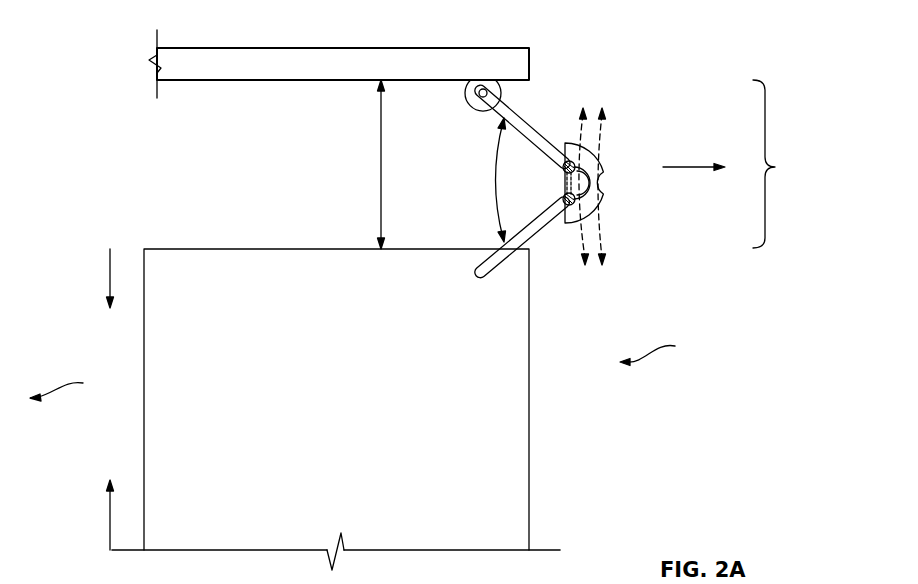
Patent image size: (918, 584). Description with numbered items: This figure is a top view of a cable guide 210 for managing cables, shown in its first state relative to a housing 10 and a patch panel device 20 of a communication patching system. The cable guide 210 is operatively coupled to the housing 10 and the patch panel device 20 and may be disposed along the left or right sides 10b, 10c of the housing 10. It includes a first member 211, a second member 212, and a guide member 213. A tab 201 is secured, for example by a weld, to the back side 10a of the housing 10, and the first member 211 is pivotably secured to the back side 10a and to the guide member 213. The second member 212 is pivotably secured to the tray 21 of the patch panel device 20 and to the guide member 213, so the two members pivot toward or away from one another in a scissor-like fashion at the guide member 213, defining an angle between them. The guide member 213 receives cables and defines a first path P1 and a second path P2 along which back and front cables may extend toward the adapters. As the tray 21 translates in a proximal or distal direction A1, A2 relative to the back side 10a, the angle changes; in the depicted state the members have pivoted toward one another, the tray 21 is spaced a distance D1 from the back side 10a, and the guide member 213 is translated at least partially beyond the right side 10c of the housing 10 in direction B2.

The housing 10 is at (291, 55).
The back side 10a is at (176, 63).
The left side 10b is at (77, 387).
The right side 10c is at (668, 350).
The patch panel device 20 is at (590, 538).
The tray 21 is at (505, 430).
The tab 201 is at (498, 88).
The cable guide 210 is at (633, 168).
The first member 211 is at (537, 130).
The second member 212 is at (532, 243).
The guide member 213 is at (600, 162).
The distance D1 is at (380, 172).
The proximal direction A1 is at (108, 283).
The distal direction A2 is at (108, 520).
The direction B2 is at (700, 165).
The first path P1 is at (603, 259).
The second path P2 is at (600, 236).